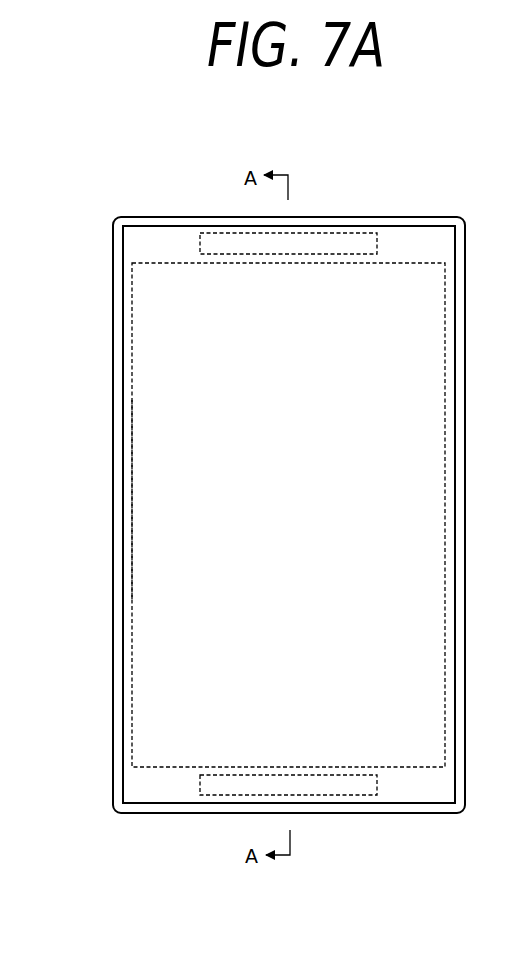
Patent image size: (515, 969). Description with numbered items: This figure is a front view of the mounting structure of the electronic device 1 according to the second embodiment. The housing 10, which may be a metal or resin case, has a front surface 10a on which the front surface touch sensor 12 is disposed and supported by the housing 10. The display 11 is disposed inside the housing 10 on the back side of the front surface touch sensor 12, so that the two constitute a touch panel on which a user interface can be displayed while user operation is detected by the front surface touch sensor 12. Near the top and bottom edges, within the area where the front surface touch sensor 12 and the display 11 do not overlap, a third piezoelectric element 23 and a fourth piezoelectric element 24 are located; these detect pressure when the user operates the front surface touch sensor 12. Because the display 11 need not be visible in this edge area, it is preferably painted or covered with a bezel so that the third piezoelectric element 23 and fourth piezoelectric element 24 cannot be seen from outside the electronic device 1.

The electronic device 1 is at (156, 827).
The housing 10 is at (465, 601).
The front surface 10a is at (358, 217).
The display 11 is at (157, 519).
The front surface touch sensor 12 is at (122, 457).
The third piezoelectric element 23 is at (237, 233).
The fourth piezoelectric element 24 is at (325, 796).